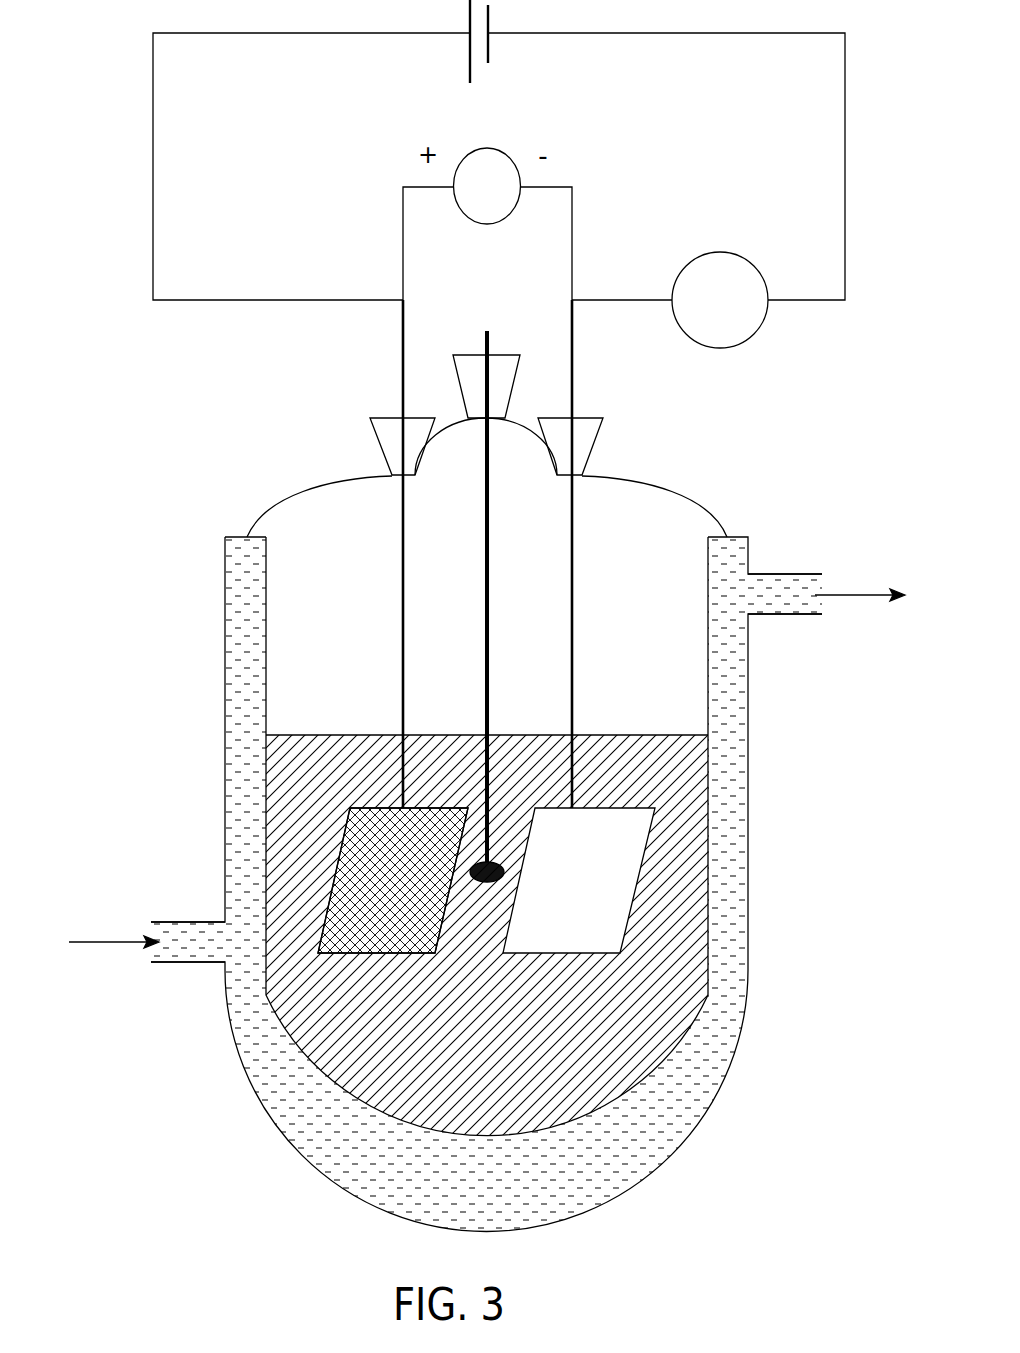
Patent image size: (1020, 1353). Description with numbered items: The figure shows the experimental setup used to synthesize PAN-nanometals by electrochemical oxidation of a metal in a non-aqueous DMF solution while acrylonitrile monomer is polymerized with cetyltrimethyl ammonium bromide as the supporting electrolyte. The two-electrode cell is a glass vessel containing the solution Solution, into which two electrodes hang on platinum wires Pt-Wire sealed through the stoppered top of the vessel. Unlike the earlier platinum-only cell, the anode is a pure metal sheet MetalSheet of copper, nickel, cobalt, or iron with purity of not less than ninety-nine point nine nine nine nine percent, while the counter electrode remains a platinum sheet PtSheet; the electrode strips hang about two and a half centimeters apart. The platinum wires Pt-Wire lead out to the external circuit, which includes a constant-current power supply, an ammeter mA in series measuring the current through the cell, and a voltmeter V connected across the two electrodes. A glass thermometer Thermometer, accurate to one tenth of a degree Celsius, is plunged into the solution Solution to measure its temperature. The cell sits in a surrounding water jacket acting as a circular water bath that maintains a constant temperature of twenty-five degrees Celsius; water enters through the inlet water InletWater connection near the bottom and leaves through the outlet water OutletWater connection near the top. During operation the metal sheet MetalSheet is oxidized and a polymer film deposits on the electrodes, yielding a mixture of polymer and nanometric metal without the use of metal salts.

The voltmeter V is at (487, 186).
The ammeter mA is at (720, 300).
The platinum wire Pt-Wire is at (402, 437).
The glass thermometer Thermometer is at (486, 372).
The solution Solution is at (487, 838).
The outlet water OutletWater is at (848, 574).
The inlet water InletWater is at (135, 916).
The metal sheet MetalSheet is at (393, 880).
The platinum sheet PtSheet is at (579, 880).